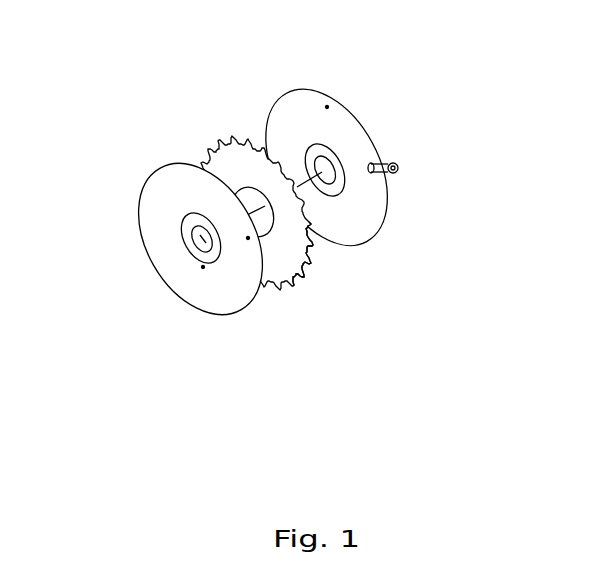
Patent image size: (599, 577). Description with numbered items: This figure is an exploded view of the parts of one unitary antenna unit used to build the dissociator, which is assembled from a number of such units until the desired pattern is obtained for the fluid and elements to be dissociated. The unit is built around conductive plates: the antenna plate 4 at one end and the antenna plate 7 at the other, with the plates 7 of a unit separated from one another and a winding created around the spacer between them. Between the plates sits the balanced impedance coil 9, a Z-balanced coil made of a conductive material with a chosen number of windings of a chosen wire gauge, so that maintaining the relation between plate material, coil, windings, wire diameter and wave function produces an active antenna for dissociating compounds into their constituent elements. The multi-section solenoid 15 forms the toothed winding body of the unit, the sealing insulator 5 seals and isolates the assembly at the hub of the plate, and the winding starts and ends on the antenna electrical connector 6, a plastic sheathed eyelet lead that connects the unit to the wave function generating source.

The antenna plate 4 is at (146, 166).
The sealing insulator 5 is at (319, 309).
The antenna electrical connector 6 is at (463, 168).
The antenna plate 7 is at (355, 122).
The balanced impedance coil 9 is at (228, 145).
The multi-section solenoid 15 is at (308, 264).